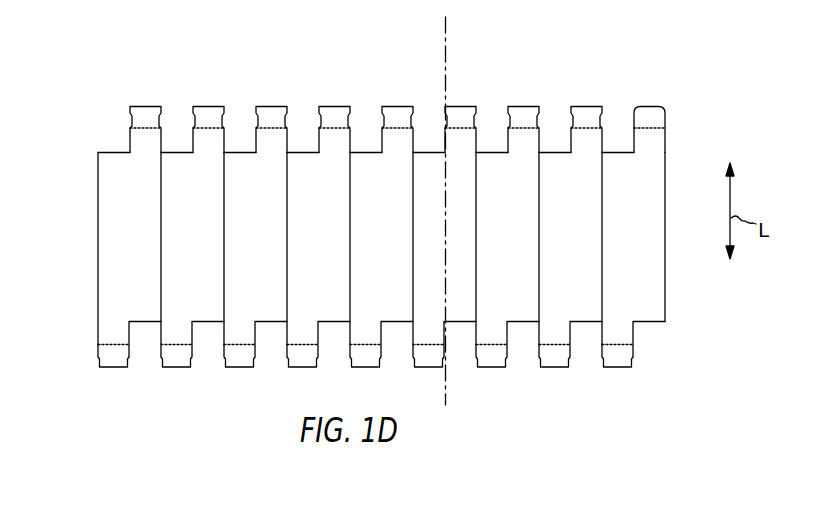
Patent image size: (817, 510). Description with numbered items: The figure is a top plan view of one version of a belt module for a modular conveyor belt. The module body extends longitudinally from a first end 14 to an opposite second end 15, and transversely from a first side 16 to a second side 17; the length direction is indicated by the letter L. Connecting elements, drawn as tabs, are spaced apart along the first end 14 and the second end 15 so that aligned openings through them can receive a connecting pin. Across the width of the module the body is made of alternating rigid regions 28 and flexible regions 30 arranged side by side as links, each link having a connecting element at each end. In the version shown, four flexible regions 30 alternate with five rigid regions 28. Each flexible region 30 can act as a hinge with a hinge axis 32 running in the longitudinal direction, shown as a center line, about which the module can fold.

The first end 14 is at (584, 106).
The second end 15 is at (557, 367).
The first side 16 is at (665, 226).
The second side 17 is at (98, 232).
The rigid region 28 is at (645, 150).
The flexible region 30 is at (580, 150).
The hinge axis 32 is at (447, 33).